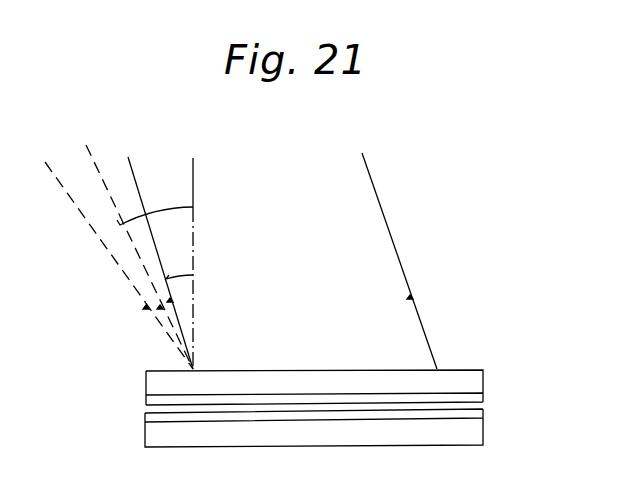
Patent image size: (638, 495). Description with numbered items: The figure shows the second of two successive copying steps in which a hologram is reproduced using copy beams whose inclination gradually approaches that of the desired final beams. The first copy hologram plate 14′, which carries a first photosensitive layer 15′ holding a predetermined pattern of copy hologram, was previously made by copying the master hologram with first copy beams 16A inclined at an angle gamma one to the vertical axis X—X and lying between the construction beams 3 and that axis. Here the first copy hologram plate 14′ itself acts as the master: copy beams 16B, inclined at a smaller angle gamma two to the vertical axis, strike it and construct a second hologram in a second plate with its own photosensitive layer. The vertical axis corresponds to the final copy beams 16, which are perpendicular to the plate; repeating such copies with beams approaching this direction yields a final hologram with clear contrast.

The copy beams 16 is at (194, 181).
The first copy beams 16A is at (92, 162).
The copy beams 16B is at (141, 172).
The construction beams 3 is at (73, 206).
The first copy hologram plate 14′ is at (489, 373).
The first photosensitive layer 15′ is at (485, 393).